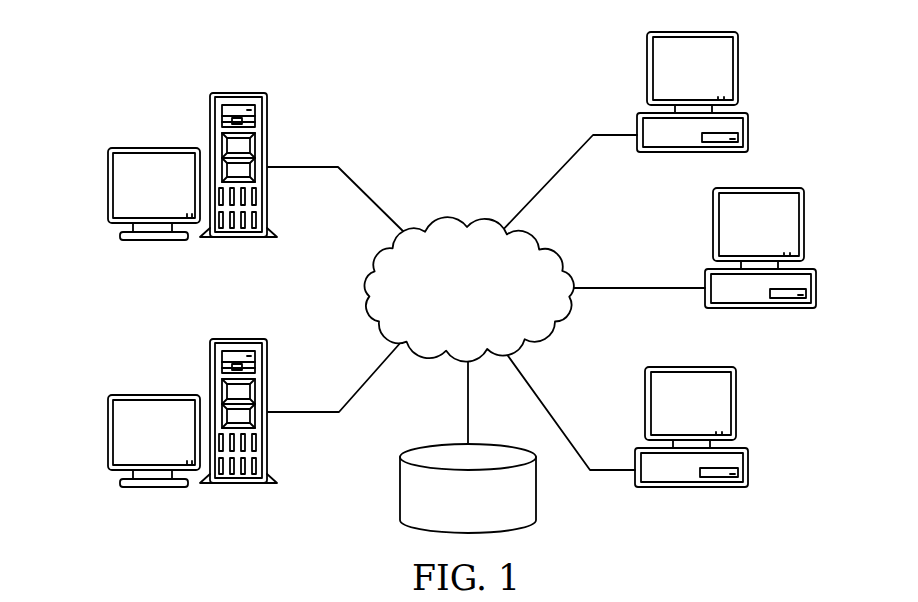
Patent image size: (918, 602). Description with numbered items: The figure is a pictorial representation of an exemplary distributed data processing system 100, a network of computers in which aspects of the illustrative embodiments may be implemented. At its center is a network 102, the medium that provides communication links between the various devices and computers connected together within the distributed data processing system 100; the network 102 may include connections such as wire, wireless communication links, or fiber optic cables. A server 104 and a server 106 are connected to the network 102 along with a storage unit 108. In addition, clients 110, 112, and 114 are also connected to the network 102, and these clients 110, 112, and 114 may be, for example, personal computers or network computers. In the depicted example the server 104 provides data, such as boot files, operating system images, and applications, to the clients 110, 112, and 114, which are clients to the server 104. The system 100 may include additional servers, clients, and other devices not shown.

The distributed data processing system 100 is at (335, 76).
The network 102 is at (462, 228).
The server 104 is at (108, 186).
The server 106 is at (108, 432).
The storage unit 108 is at (400, 489).
The client 110 is at (748, 123).
The client 112 is at (816, 300).
The client 114 is at (748, 480).